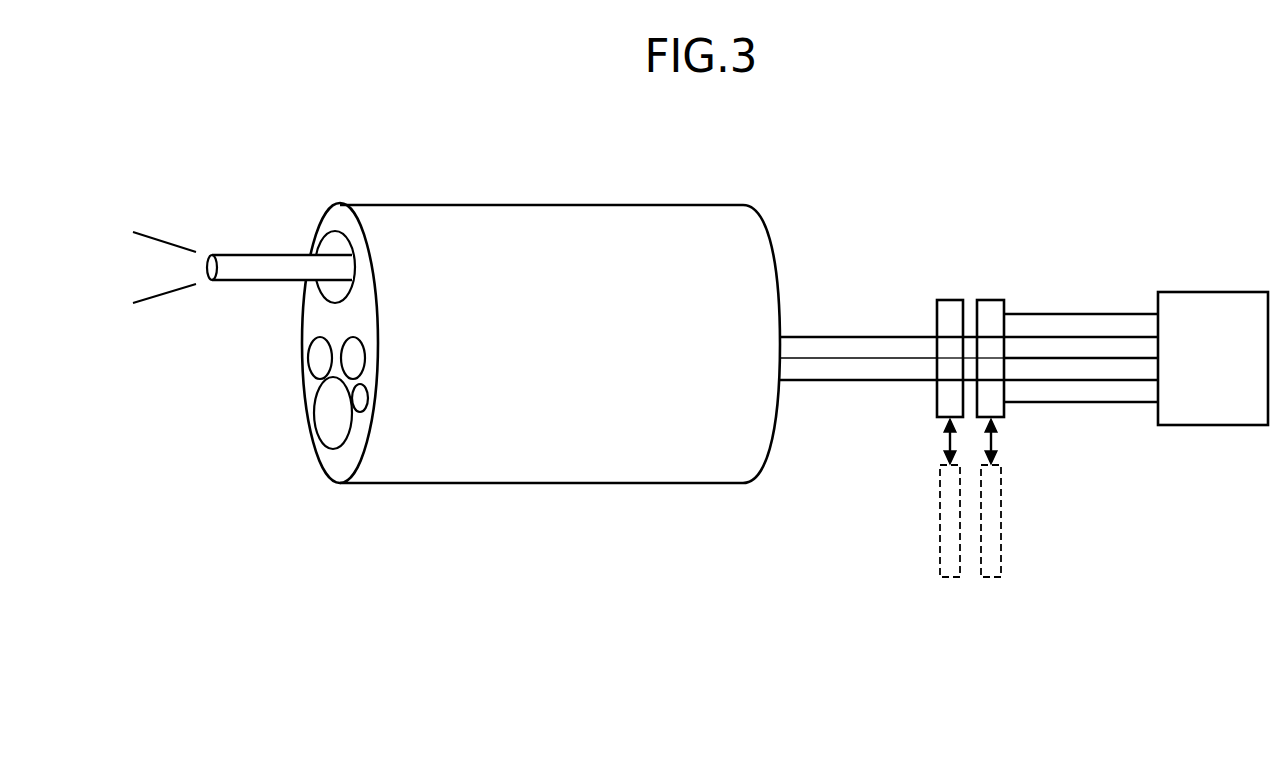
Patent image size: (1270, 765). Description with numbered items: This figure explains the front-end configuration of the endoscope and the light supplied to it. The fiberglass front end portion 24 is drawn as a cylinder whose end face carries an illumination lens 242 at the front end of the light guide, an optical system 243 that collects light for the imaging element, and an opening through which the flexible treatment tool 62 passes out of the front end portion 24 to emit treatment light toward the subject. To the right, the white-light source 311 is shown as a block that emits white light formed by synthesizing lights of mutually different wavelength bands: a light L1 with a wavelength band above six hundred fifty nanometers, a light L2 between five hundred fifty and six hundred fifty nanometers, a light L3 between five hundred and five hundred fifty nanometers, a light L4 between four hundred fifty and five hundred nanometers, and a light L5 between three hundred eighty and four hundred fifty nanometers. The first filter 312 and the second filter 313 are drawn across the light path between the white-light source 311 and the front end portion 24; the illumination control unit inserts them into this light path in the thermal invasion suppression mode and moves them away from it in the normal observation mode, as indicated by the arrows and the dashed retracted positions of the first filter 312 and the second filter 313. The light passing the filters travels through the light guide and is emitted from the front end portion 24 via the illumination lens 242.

The front end portion 24 is at (641, 190).
The treatment tool 62 is at (257, 255).
The illumination lens 242 is at (320, 352).
The optical system 243 is at (316, 430).
The white-light source 311 is at (1213, 292).
The first filter 312 is at (990, 300).
The second filter 313 is at (950, 300).
The light L1 is at (1088, 313).
The light L2 is at (865, 335).
The light L3 is at (812, 360).
The light L4 is at (865, 382).
The light L5 is at (1088, 403).